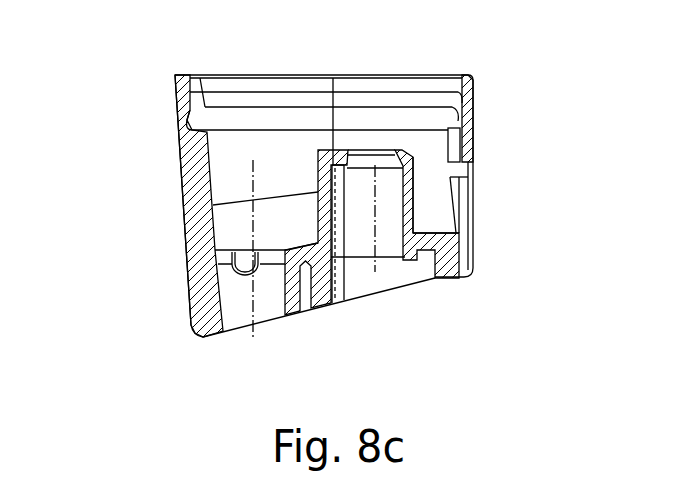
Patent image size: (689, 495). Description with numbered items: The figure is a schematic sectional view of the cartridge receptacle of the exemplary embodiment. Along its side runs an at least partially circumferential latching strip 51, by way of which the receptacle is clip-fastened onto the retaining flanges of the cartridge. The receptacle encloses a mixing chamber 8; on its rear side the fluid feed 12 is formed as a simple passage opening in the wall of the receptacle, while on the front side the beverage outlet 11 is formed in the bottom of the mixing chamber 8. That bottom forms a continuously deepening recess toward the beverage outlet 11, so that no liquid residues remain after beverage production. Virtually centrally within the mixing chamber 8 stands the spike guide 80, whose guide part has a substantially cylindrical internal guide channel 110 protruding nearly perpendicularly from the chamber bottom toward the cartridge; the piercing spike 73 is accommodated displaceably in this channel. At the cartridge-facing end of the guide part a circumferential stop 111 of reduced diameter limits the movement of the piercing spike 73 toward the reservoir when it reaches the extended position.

The latching strip 51 is at (187, 80).
The mixing chamber 8 is at (257, 160).
The circumferential stop 111 is at (412, 160).
The spike guide 80 is at (412, 196).
The fluid feed 12 is at (463, 212).
The guide channel 110 is at (390, 232).
The beverage outlet 11 is at (267, 331).
The piercing spike 73 is at (403, 299).